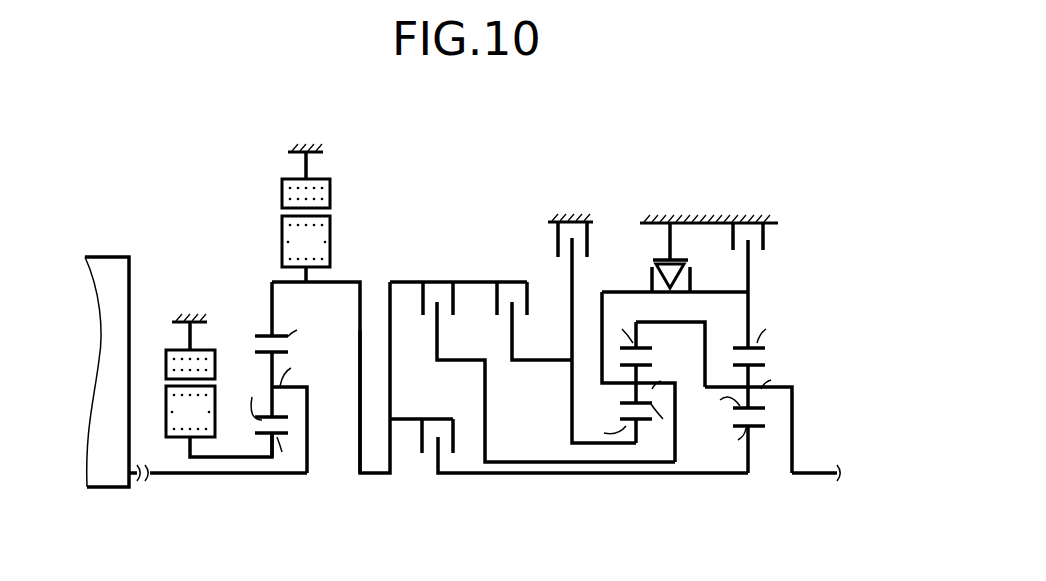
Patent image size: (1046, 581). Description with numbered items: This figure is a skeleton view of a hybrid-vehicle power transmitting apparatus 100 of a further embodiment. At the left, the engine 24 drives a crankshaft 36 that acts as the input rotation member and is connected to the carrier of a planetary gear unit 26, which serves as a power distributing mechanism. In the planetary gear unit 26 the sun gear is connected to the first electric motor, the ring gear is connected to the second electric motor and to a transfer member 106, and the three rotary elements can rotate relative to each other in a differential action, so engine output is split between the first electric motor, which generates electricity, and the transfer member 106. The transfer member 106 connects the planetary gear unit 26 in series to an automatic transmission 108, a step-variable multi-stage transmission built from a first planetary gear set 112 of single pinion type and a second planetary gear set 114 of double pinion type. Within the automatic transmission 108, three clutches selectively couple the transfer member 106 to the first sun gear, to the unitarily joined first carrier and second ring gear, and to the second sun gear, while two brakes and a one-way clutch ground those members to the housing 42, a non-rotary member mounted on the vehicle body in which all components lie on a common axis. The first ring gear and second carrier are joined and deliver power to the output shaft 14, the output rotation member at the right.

The output shaft 14 is at (807, 480).
The engine 24 is at (105, 262).
The planetary gear unit 26 is at (270, 477).
The crankshaft 36 is at (165, 476).
The housing 42 is at (768, 220).
The power transmitting apparatus 100 is at (657, 120).
The transfer member 106 is at (360, 426).
The automatic transmission 108 is at (452, 209).
The first planetary gear set 112 is at (631, 479).
The second planetary gear set 114 is at (748, 484).